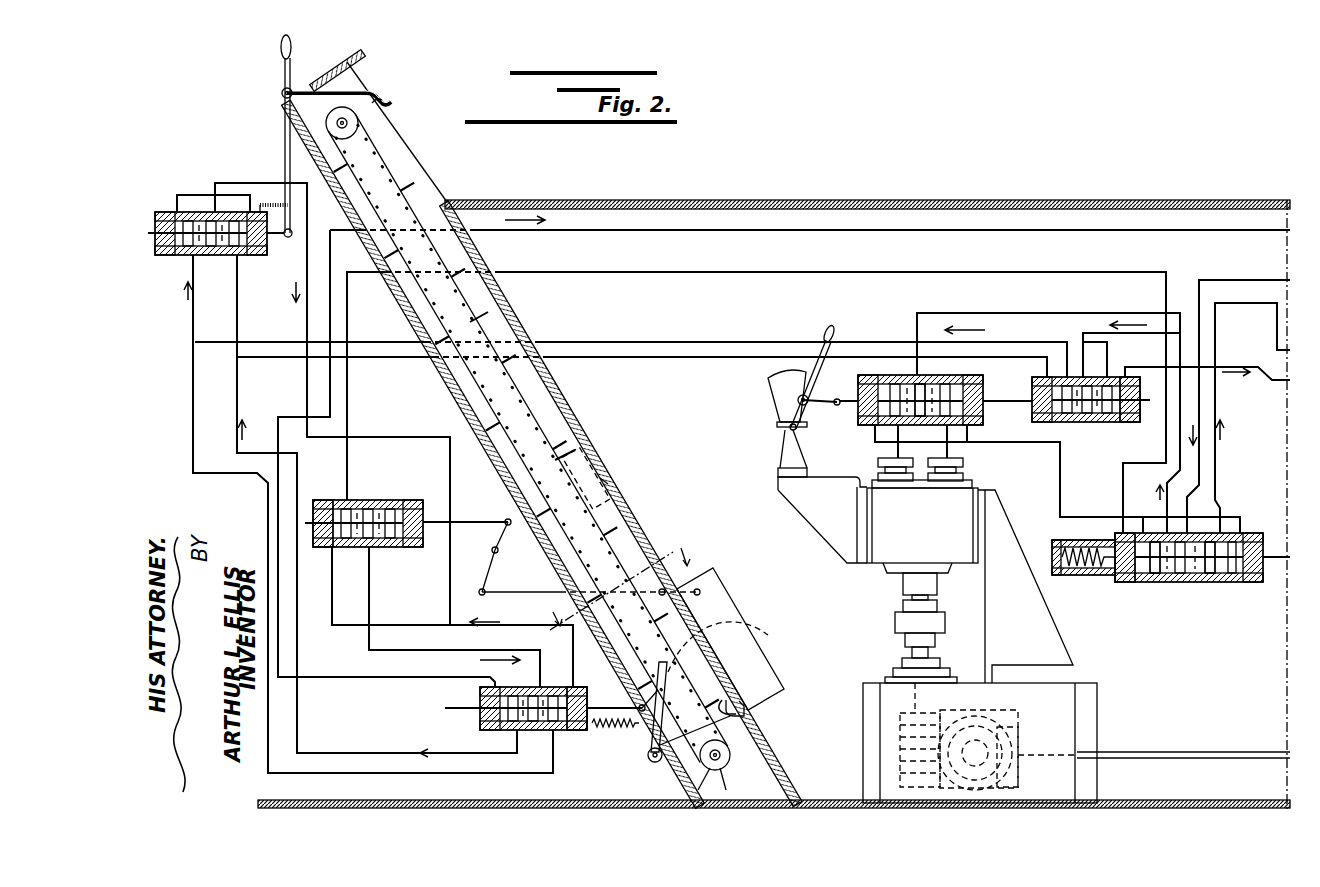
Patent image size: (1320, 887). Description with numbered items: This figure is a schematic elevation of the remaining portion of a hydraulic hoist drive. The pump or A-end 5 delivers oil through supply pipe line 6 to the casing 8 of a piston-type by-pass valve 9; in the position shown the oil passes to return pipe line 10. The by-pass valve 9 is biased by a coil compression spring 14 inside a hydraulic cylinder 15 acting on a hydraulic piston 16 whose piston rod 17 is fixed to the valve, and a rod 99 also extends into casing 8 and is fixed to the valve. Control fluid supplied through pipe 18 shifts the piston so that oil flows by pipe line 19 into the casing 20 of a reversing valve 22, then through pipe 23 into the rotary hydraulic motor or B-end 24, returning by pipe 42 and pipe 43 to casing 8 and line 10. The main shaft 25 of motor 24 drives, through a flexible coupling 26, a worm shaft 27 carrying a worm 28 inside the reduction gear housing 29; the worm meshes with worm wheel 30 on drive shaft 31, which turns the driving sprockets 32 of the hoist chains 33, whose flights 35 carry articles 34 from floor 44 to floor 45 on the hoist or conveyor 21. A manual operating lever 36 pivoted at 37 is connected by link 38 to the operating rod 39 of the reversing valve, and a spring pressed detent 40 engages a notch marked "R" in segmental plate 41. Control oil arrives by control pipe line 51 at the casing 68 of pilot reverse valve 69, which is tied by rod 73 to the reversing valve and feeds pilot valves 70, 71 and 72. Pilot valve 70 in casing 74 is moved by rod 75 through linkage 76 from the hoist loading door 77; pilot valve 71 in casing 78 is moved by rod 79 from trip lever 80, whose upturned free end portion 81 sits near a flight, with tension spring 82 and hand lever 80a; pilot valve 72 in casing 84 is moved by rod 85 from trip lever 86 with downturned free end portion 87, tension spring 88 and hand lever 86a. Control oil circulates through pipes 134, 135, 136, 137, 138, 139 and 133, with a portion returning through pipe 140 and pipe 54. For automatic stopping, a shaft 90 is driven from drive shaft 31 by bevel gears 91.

The pump or A-end 5 is at (614, 578).
The supply pipe line 6 is at (1235, 280).
The casing of by-pass valve 8 is at (1245, 536).
The by-pass valve 9 is at (1210, 578).
The return pipe line 10 is at (1216, 467).
The coil compression spring 14 is at (1085, 576).
The hydraulic cylinder 15 is at (1056, 541).
The hydraulic piston 16 is at (1120, 580).
The piston rod 17 is at (1155, 578).
The control pressure pipe 18 is at (655, 274).
The pipe line to reversing valve 19 is at (950, 312).
The casing of reversing valve 20 is at (982, 378).
The hoist or conveyor 21 is at (542, 453).
The reversing valve 22 is at (922, 392).
The pipe to hydraulic motor 23 is at (955, 456).
The rotary hydraulic motor or B-end 24 is at (925, 580).
The main shaft 25 is at (903, 597).
The flexible coupling 26 is at (945, 612).
The worm shaft 27 is at (912, 651).
The worm 28 is at (903, 728).
The reduction gear housing 29 is at (863, 692).
The worm wheel 30 is at (970, 714).
The drive shaft 31 is at (985, 745).
The driving sprockets 32 is at (724, 766).
The hoist chains 33 is at (490, 315).
The articles 34 is at (610, 478).
The flights 35 is at (578, 452).
The manual operating lever 36 is at (834, 330).
The pivot of operating lever 37 is at (778, 428).
The link 38 is at (820, 398).
The operating rod 39 is at (840, 405).
The spring pressed detent 40 is at (812, 368).
The segmental plate 41 is at (770, 404).
The pipe from motor 42 is at (876, 456).
The pipe to by-pass valve casing 43 is at (1058, 470).
The lower floor 44 is at (422, 801).
The upper floor 45 is at (685, 200).
The control pipe line 51 is at (1275, 318).
The pipe to reservoir 54 is at (1265, 378).
The casing of pilot reverse valve 68 is at (1138, 420).
The pilot reverse valve 69 is at (1082, 415).
The pilot valve 70 is at (378, 505).
The pilot valve 71 is at (527, 700).
The pilot valve 72 is at (212, 256).
The rod 73 is at (1005, 403).
The casing of pilot valve 70 74 is at (322, 500).
The rod 75 is at (458, 521).
The linkage 76 is at (517, 590).
The hoist loading door 77 is at (735, 596).
The casing of pilot valve 71 78 is at (572, 731).
The rod 79 is at (605, 706).
The trip lever 80 is at (650, 760).
The hand lever 80a is at (738, 646).
The upturned free end portion 81 is at (748, 712).
The tension spring 82 is at (615, 736).
The casing of pilot valve 72 84 is at (166, 214).
The rod 85 is at (287, 240).
The trip lever 86 is at (282, 105).
The hand lever 86a is at (288, 58).
The downturned free end portion 87 is at (380, 102).
The tension spring 88 is at (275, 195).
The control shaft 90 is at (1190, 751).
The bevel gears 91 is at (1010, 760).
The rod 99 is at (1275, 568).
The pipe 133 is at (738, 232).
The pipe 134 is at (700, 340).
The pipe 135 is at (193, 383).
The pipe 136 is at (226, 183).
The pipe 137 is at (369, 650).
The pipe 138 is at (236, 400).
The pipe 139 is at (188, 193).
The pipe 140 is at (386, 358).